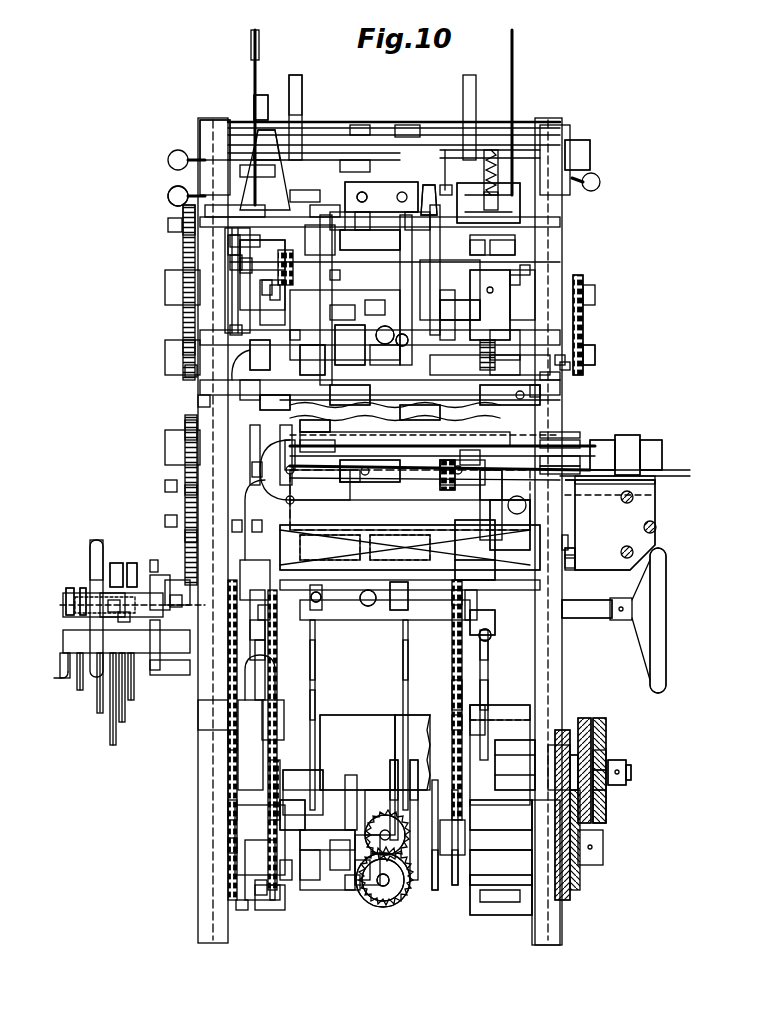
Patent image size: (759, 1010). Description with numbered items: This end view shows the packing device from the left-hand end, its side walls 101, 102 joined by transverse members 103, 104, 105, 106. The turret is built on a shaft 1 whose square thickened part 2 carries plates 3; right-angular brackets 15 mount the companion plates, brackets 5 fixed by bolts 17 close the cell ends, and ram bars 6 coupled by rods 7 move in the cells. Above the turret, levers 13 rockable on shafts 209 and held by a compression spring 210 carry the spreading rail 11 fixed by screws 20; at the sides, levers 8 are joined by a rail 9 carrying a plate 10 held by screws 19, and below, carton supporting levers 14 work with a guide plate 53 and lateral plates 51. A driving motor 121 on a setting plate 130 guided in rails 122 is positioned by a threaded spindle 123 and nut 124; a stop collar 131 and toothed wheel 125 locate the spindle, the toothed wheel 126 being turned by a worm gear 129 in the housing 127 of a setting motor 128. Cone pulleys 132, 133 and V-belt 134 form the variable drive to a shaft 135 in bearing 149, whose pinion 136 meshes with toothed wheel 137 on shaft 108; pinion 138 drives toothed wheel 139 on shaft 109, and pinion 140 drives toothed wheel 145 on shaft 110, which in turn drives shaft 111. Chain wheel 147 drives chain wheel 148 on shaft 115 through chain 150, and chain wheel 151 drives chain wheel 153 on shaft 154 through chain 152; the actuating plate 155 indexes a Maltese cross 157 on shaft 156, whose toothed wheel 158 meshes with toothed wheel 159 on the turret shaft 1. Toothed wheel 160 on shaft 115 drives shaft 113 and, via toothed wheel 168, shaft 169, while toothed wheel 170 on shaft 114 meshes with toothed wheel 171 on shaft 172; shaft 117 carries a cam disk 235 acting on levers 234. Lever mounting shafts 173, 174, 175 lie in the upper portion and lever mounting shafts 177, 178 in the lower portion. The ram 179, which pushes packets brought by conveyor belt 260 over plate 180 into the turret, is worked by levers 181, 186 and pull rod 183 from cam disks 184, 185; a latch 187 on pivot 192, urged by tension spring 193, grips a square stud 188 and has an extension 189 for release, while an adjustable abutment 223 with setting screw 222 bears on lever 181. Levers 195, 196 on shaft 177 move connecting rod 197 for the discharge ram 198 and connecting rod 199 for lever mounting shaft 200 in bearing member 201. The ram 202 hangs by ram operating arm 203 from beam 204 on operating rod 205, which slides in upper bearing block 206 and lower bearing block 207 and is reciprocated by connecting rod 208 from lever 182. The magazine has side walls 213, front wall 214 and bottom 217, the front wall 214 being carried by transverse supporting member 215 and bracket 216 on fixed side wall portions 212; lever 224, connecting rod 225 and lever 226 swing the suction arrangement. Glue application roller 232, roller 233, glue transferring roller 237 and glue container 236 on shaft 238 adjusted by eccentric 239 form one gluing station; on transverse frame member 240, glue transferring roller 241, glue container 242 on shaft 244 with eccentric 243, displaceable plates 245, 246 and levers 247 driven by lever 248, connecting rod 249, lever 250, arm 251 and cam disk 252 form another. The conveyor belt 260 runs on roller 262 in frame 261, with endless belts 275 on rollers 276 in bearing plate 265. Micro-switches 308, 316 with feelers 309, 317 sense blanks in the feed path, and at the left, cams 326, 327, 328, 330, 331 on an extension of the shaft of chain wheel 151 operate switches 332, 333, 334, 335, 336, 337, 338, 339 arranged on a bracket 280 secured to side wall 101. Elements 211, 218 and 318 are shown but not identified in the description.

The frame 1 is at (600, 442).
The guide rail 2 is at (565, 474).
The carriage 3 is at (588, 422).
The guide rod 5 is at (330, 447).
The guide rail 6 is at (540, 460).
The slide 7 is at (355, 478).
The rail 8 is at (545, 416).
The rail 9 is at (535, 438).
The holder 10 is at (465, 462).
The gripper 11 is at (305, 240).
The clamp bar 13 is at (392, 240).
The table 14 is at (345, 522).
The guide 15 is at (400, 412).
The bracket 17 is at (320, 447).
The spring strip 19 is at (445, 412).
The pin 20 is at (335, 273).
The support 51 is at (285, 558).
The stop 53 is at (572, 552).
The frame column 101 is at (205, 713).
The side plate 102 is at (570, 520).
The bearing 103 is at (340, 870).
The handwheel shaft 104 is at (575, 602).
The bracket 105 is at (565, 567).
The base block 106 is at (520, 912).
The shaft end 108 is at (623, 762).
The nut 109 is at (631, 773).
The housing 110 is at (488, 845).
The housing plate 111 is at (513, 840).
The lever 113 is at (272, 292).
The bearing 114 is at (595, 352).
The lever 115 is at (242, 266).
The cam block 117 is at (492, 302).
The motor housing 121 is at (372, 722).
The bracket 122 is at (330, 830).
The sprocket 123 is at (405, 895).
The cover 124 is at (401, 752).
The gear 125 is at (365, 848).
The shaft 126 is at (362, 882).
The hub 127 is at (384, 888).
The bearing block 128 is at (306, 885).
The gear wheel 129 is at (395, 900).
The rod 130 is at (392, 775).
The rod 131 is at (410, 790).
The coupling 132 is at (500, 725).
The bearing housing 133 is at (535, 750).
The chain guide 134 is at (468, 720).
The collar 135 is at (606, 780).
The gear 136 is at (603, 800).
The gear 137 is at (585, 718).
The pinion 138 is at (606, 758).
The gear 139 is at (600, 718).
The spacer 140 is at (574, 755).
The gear rack 145 is at (572, 868).
The chain 147 is at (230, 845).
The bar 148 is at (232, 330).
The bushing 149 is at (500, 755).
The chain 150 is at (230, 810).
The shaft 151 is at (262, 895).
The rod 152 is at (312, 700).
The lever 153 is at (262, 613).
The pivot 154 is at (265, 610).
The shaft 155 is at (180, 600).
The bracket 156 is at (167, 520).
The bracket 157 is at (167, 486).
The rack 158 is at (188, 535).
The toothed rack 159 is at (186, 432).
The gripper arms 160 is at (228, 245).
The toothed rack 168 is at (183, 207).
The bearing 169 is at (168, 224).
The rack 170 is at (578, 320).
The guide 171 is at (560, 358).
The guide 172 is at (565, 366).
The cross bar 173 is at (200, 400).
The block 174 is at (285, 395).
The plate 175 is at (322, 212).
The housing 177 is at (305, 772).
The chain end 178 is at (242, 910).
The holder 179 is at (485, 478).
The slide 180 is at (350, 480).
The rod 181 is at (488, 693).
The chain 182 is at (232, 737).
The block 183 is at (500, 522).
The rod 184 is at (456, 888).
The rod 185 is at (436, 892).
The chain 186 is at (462, 693).
The bracket 187 is at (490, 545).
The guide 188 is at (495, 565).
The sprocket 189 is at (455, 598).
The stop 192 is at (565, 540).
The bracket 193 is at (490, 612).
The rod 195 is at (408, 660).
The rod 196 is at (315, 660).
The block 197 is at (398, 612).
The plate 198 is at (400, 558).
The roller 199 is at (320, 605).
The support 200 is at (405, 540).
The guide 201 is at (290, 480).
The block 202 is at (310, 345).
The bar 203 is at (357, 166).
The plate 204 is at (305, 195).
The clamp 205 is at (262, 95).
The support 206 is at (285, 137).
The bracket 207 is at (185, 345).
The rod 208 is at (254, 525).
The pin 209 is at (385, 185).
The block 210 is at (402, 192).
The bar 211 is at (385, 252).
The knob 212 is at (200, 180).
The rod 213 is at (254, 50).
The bar 214 is at (296, 75).
The rail 215 is at (408, 136).
The bearing block 216 is at (205, 128).
The rail 217 is at (362, 135).
The roller 218 is at (368, 608).
The pin 222 is at (490, 637).
The rod 223 is at (486, 645).
The block 224 is at (576, 140).
The lever 225 is at (265, 287).
The bracket 226 is at (232, 265).
The block 232 is at (478, 250).
The block 233 is at (450, 312).
The pin 234 is at (530, 275).
The pin 235 is at (525, 285).
The housing 236 is at (503, 216).
The block 237 is at (500, 250).
The rod 238 is at (445, 187).
The spring 239 is at (491, 150).
The bar 240 is at (540, 392).
The roller 241 is at (400, 335).
The roller 242 is at (380, 330).
The block 243 is at (345, 332).
The block 244 is at (300, 372).
The bar 245 is at (540, 377).
The gear 246 is at (500, 368).
The block 247 is at (352, 318).
The bracket 248 is at (187, 370).
The rod 249 is at (254, 470).
The chain end 250 is at (276, 900).
The shaft 251 is at (288, 882).
The bracket 252 is at (300, 830).
The rail 260 is at (555, 476).
The bracket 261 is at (187, 490).
The rod 262 is at (236, 528).
The handwheel 265 is at (660, 508).
The block 275 is at (655, 445).
The block 276 is at (630, 445).
The shaft 280 is at (131, 660).
The pin 308 is at (292, 332).
The lever 309 is at (330, 330).
The block 316 is at (345, 428).
The strip 317 is at (335, 413).
The gear train 318 is at (352, 890).
The drive unit 326 is at (152, 565).
The shaft 327 is at (125, 620).
The gear 328 is at (115, 615).
The disc 330 is at (70, 588).
The disc 331 is at (82, 588).
The block 332 is at (116, 563).
The block 333 is at (132, 563).
The link 334 is at (95, 545).
The shaft 335 is at (122, 700).
The shaft 336 is at (113, 700).
The rod 337 is at (100, 712).
The rod 338 is at (80, 690).
The rod 339 is at (62, 676).